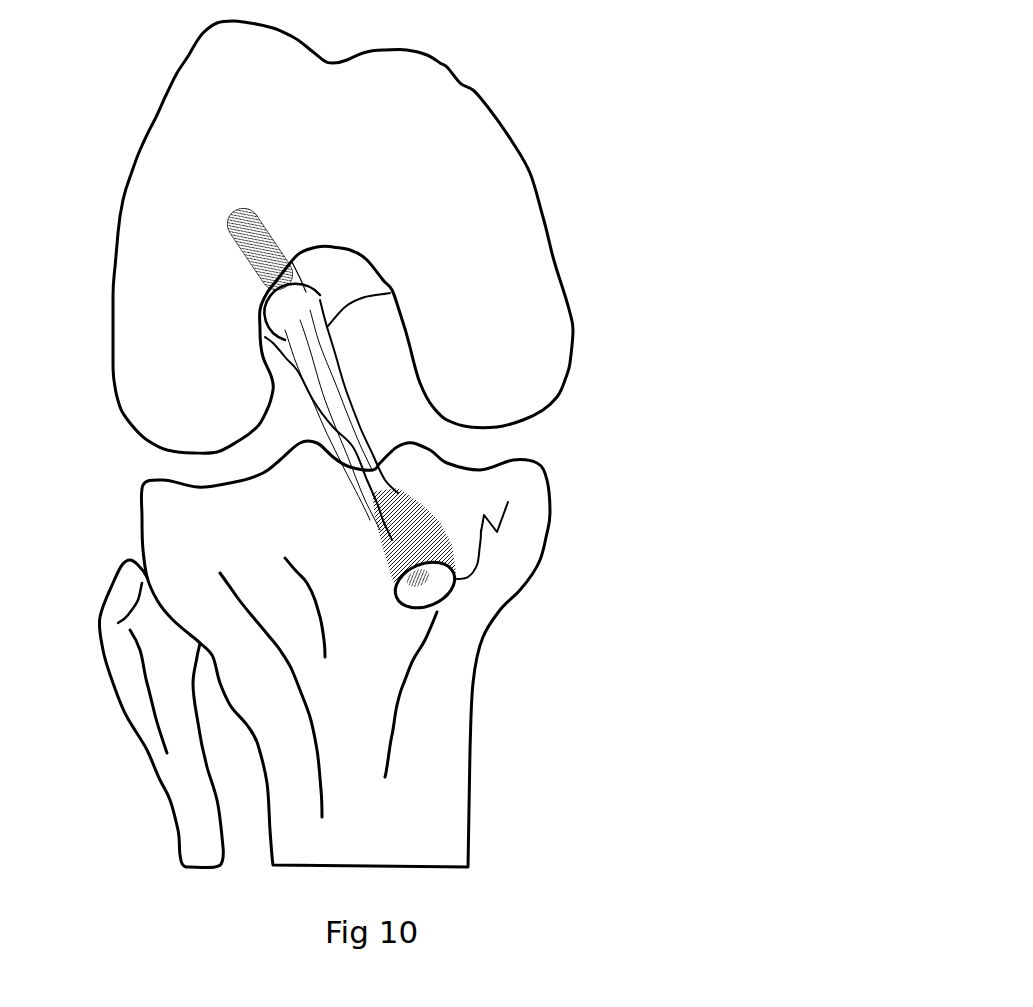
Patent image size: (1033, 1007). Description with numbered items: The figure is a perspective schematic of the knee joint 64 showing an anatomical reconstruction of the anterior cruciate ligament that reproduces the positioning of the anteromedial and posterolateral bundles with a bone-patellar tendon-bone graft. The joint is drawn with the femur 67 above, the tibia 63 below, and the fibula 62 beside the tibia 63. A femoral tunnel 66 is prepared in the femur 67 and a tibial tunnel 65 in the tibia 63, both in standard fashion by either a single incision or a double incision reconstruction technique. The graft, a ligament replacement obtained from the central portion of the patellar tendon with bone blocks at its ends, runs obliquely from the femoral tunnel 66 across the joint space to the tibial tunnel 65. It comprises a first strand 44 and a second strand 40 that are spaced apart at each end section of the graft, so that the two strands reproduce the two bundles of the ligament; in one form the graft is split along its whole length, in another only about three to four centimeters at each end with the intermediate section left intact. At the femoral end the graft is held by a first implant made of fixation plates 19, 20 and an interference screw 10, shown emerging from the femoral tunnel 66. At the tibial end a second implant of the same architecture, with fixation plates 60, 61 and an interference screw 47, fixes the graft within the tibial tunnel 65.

The interference screw 10 is at (233, 212).
The fixation plate 19 is at (290, 250).
The fixation plate 20 is at (233, 263).
The second strand 40 is at (293, 380).
The first strand 44 is at (343, 377).
The interference screw 47 is at (423, 587).
The fixation plate 60 is at (387, 552).
The fixation plate 61 is at (437, 540).
The fibula 62 is at (180, 772).
The tibia 63 is at (447, 818).
The knee joint 64 is at (633, 428).
The tibial tunnel 65 is at (443, 585).
The femoral tunnel 66 is at (263, 340).
The femur 67 is at (470, 158).